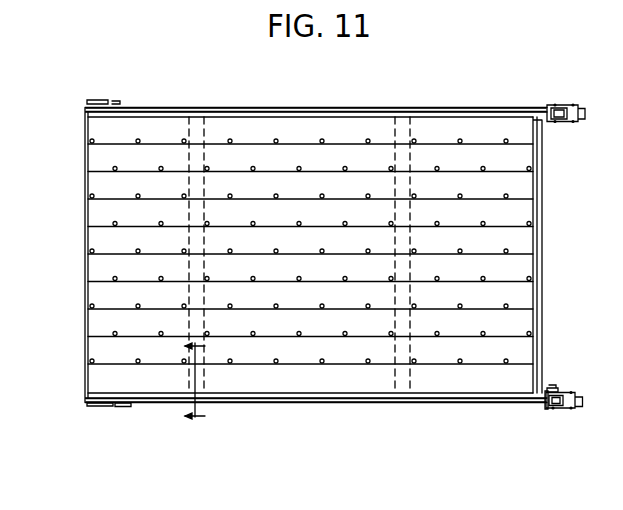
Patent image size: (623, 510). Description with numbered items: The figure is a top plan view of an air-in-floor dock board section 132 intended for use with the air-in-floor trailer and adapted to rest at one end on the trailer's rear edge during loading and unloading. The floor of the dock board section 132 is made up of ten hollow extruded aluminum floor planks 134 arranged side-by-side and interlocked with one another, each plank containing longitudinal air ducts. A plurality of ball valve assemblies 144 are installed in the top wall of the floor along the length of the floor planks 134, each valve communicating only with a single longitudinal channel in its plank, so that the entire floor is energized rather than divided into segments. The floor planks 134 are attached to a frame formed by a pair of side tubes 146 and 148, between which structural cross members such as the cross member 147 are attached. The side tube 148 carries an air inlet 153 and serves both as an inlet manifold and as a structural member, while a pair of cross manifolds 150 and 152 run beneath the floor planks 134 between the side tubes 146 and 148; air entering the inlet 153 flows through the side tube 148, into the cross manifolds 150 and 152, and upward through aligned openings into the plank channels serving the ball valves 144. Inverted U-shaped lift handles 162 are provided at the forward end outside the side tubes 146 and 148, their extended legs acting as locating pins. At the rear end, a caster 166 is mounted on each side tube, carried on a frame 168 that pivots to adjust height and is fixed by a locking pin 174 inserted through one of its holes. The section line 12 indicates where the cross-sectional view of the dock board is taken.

The section line 12- 12 is at (205, 381).
The dock board section 132 is at (366, 104).
The floor planks 134 is at (95, 350).
The ball valve assemblies 144 is at (276, 249).
The side tube 146 is at (264, 107).
The structural cross member 147 is at (540, 282).
The side tube 148 is at (341, 403).
The cross manifold 150 is at (192, 237).
The cross manifold 152 is at (409, 240).
The air inlet 153 is at (124, 407).
The lift handles 162 is at (97, 100).
The caster 166 is at (582, 105).
The frame 168 is at (566, 410).
The locking pin 174 is at (552, 387).